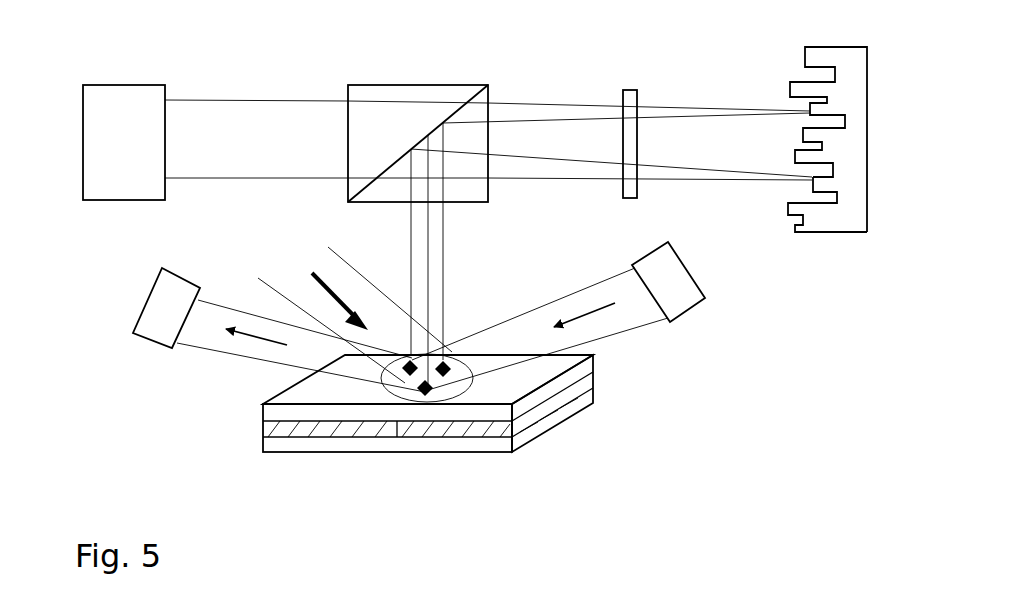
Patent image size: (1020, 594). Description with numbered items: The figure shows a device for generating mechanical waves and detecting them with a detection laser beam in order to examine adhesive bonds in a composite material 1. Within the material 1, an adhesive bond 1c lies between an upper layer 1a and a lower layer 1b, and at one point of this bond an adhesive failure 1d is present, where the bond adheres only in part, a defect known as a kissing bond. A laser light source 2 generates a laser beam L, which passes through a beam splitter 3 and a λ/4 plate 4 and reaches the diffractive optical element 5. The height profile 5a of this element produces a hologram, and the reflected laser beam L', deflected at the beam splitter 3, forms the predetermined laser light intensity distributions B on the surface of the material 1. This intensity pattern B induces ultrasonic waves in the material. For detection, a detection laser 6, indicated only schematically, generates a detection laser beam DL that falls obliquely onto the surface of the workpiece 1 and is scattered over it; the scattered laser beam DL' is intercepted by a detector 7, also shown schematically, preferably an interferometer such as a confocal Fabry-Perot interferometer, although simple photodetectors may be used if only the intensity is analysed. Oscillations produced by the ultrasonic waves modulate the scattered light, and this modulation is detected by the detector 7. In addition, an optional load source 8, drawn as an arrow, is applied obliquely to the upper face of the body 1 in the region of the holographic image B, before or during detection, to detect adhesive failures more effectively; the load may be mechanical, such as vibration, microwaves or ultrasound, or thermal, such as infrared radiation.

The material 1 is at (310, 392).
The upper layer 1a is at (282, 410).
The lower layer 1b is at (273, 443).
The adhesive bond 1c is at (308, 430).
The adhesive failure 1d is at (413, 430).
The laser light source 2 is at (121, 100).
The beam splitter 3 is at (400, 90).
The λ/4 plate 4 is at (623, 97).
The diffractive optical element 5 is at (831, 240).
The height profile 5a is at (788, 190).
The detection laser 6 is at (672, 298).
The detector 7 is at (165, 307).
The load source 8 is at (327, 297).
The laser light intensity distributions B is at (432, 391).
The laser beam L is at (256, 105).
The reflected laser beam L' is at (611, 184).
The detection laser beam DL is at (563, 339).
The scattered laser beam DL' is at (274, 348).